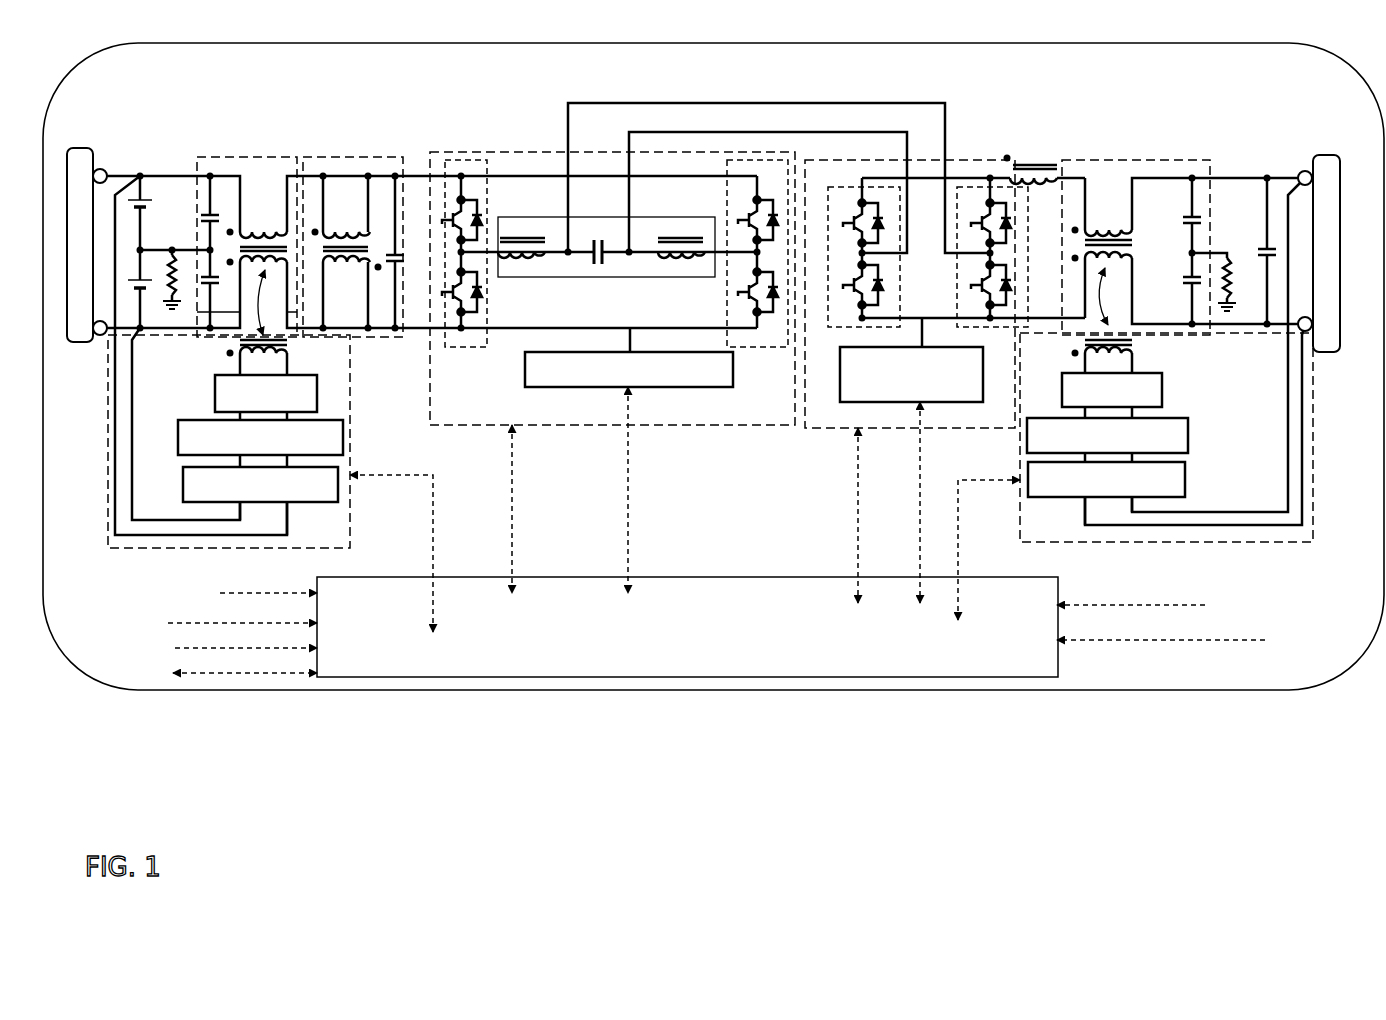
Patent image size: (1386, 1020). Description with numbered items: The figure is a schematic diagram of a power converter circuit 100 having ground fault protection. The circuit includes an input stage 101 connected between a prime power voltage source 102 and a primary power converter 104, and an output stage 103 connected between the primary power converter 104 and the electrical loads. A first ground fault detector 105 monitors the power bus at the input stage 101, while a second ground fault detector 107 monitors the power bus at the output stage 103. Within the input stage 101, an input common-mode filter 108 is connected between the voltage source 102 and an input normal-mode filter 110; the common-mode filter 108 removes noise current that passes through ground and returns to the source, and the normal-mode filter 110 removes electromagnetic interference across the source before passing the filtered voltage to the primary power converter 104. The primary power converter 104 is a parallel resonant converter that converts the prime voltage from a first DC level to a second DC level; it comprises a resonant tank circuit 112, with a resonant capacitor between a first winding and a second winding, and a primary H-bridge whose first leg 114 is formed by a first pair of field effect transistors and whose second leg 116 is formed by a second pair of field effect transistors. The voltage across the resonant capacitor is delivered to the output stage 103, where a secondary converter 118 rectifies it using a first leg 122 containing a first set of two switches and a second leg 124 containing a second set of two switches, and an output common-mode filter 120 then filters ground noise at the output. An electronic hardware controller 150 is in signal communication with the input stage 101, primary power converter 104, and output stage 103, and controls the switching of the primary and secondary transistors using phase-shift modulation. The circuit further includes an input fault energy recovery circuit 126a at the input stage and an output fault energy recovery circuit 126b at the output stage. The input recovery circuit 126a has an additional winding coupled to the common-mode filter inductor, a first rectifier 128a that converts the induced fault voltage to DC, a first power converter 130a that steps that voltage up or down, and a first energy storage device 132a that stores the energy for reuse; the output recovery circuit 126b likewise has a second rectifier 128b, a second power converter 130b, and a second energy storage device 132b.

The power converter circuit 100 is at (97, 57).
The input stage 101 is at (172, 122).
The prime power voltage source 102 is at (80, 160).
The output stage 103 is at (1177, 113).
The primary power converter 104 is at (896, 245).
The first ground fault detector 105 is at (629, 377).
The second ground fault detector 107 is at (872, 392).
The input common-mode filter 108 is at (252, 155).
The input normal-mode filter 110 is at (358, 150).
The resonant tank circuit 112 is at (605, 278).
The first leg 114 is at (465, 350).
The second leg 116 is at (757, 350).
The secondary converter 118 is at (945, 241).
The output common-mode filter 120 is at (1118, 155).
The first leg 122 is at (845, 350).
The second leg 124 is at (1007, 352).
The input fault energy recovery circuit 126a is at (277, 441).
The output fault energy recovery circuit 126b is at (1166, 464).
The first rectifier 128a is at (215, 396).
The second rectifier 128b is at (1163, 385).
The first power converter 130a is at (200, 441).
The second power converter 130b is at (1190, 437).
The first energy storage device 132a is at (200, 488).
The second energy storage device 132b is at (1187, 482).
The electronic hardware controller 150 is at (745, 580).